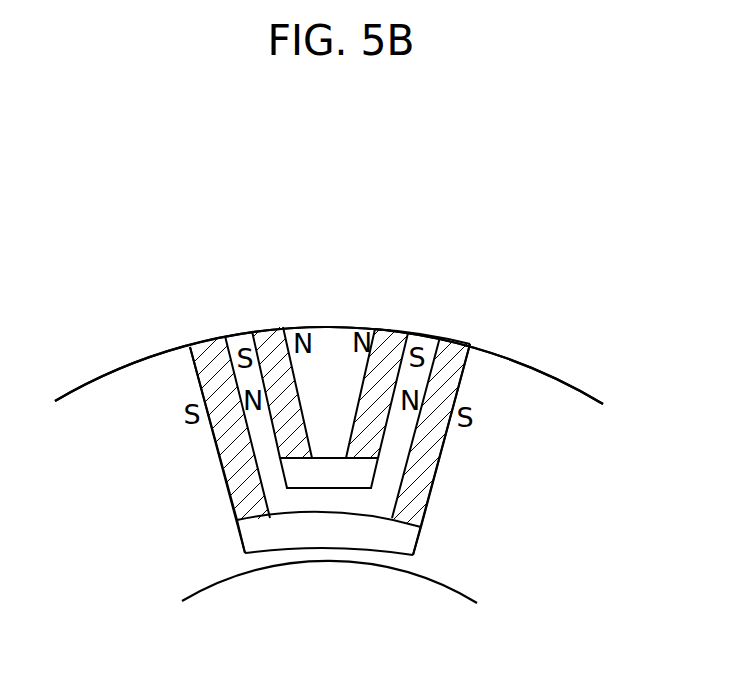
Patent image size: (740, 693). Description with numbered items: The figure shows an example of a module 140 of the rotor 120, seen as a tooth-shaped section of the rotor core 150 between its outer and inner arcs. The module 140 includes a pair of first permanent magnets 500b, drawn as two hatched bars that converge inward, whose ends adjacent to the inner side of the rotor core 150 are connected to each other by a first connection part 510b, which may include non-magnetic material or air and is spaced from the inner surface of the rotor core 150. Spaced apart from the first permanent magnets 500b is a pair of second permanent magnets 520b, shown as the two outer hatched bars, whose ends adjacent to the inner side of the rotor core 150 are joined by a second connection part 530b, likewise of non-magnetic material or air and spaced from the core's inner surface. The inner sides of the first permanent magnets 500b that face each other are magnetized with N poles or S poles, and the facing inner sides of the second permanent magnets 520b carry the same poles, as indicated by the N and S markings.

The rotor 120 is at (155, 284).
The module 140 is at (410, 322).
The rotor core 150 is at (525, 395).
The first permanent magnets 500b is at (383, 330).
The first connection part 510b is at (318, 474).
The second permanent magnets 520b is at (235, 435).
The second connection part 530b is at (357, 528).